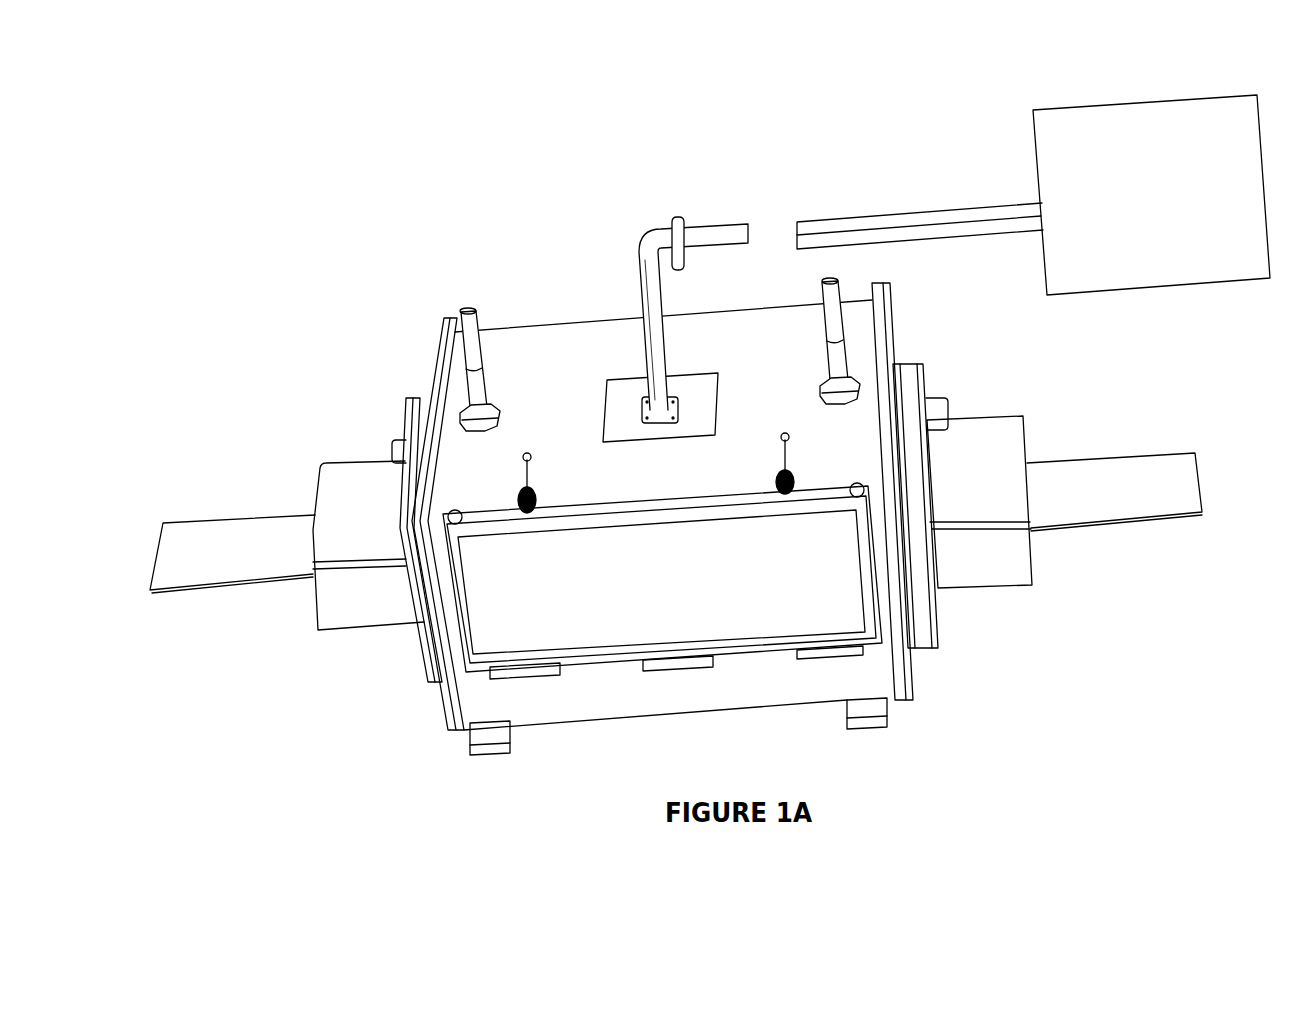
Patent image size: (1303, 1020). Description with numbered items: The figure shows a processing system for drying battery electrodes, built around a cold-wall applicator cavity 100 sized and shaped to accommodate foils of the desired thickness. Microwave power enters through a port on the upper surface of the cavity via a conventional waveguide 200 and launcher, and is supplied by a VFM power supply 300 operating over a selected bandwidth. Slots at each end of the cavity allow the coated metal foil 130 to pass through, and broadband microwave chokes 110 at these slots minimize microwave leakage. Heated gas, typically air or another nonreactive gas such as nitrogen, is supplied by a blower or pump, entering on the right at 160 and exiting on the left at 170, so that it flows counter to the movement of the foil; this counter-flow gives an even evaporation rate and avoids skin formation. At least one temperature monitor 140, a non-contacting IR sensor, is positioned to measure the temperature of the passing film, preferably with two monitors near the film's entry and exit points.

The cold-wall applicator cavity 100 is at (676, 461).
The broadband microwave chokes 110 is at (1064, 496).
The metal foil 130 is at (287, 534).
The temperature monitor 140 is at (655, 334).
The heated gas entry 160 is at (982, 382).
The heated gas exit 170 is at (319, 403).
The waveguide 200 is at (656, 259).
The VFM power supply 300 is at (1033, 168).